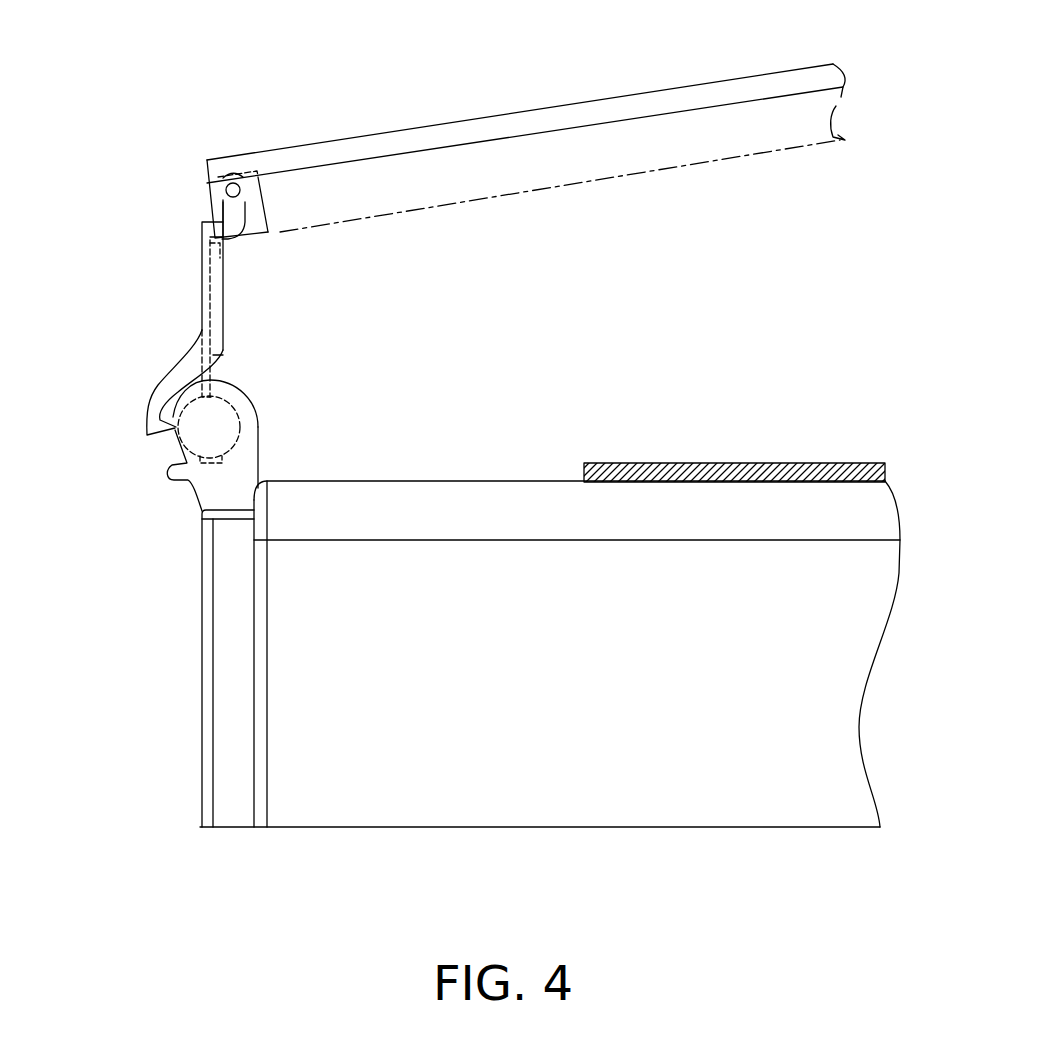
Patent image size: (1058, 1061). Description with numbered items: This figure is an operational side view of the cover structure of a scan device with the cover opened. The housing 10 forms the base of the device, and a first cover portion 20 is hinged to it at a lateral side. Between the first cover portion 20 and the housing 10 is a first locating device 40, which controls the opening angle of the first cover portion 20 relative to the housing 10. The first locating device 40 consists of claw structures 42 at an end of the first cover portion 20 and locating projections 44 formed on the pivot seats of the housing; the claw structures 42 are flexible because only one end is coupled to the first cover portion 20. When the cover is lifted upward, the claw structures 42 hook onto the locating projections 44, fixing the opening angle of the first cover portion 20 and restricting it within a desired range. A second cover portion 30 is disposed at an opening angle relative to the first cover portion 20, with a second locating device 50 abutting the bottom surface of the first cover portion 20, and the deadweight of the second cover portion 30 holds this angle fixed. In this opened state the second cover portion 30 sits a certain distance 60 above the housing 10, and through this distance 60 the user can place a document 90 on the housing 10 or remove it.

The housing 10 is at (665, 760).
The first cover portion 20 is at (203, 278).
The second cover portion 30 is at (557, 106).
The first locating device 40 is at (150, 415).
The claw structure 42 is at (161, 441).
The locating projection 44 is at (165, 420).
The second locating device 50 is at (273, 204).
The distance 60 is at (707, 291).
The document 90 is at (716, 462).